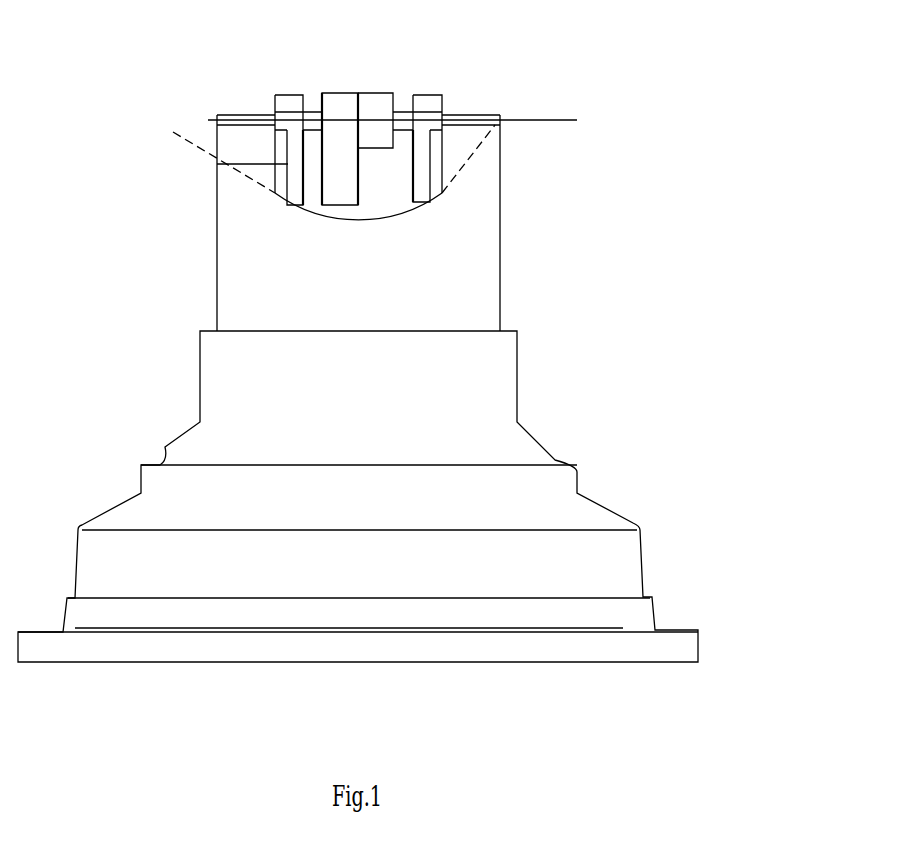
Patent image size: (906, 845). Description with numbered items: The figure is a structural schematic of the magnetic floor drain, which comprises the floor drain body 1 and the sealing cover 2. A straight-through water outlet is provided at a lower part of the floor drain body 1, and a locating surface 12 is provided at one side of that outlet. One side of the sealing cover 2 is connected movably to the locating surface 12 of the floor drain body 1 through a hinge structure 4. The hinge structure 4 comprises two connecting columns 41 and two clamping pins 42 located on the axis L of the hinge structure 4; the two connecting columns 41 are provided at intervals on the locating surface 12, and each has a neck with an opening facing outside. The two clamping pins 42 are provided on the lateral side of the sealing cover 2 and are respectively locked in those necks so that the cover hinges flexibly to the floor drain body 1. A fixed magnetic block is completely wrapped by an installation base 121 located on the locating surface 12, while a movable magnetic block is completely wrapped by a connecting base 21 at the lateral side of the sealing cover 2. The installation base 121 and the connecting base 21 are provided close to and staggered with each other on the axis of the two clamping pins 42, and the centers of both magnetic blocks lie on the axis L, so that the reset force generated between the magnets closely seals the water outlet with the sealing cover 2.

The floor drain body 1 is at (250, 280).
The locating surface 12 is at (455, 150).
The sealing cover 2 is at (465, 116).
The connecting base 21 is at (382, 112).
The installation base 121 is at (342, 115).
The hinge structure 4 is at (203, 116).
The connecting column 41 is at (220, 160).
The clamping pin 42 is at (290, 98).
The axis of the hinge structure L is at (401, 120).